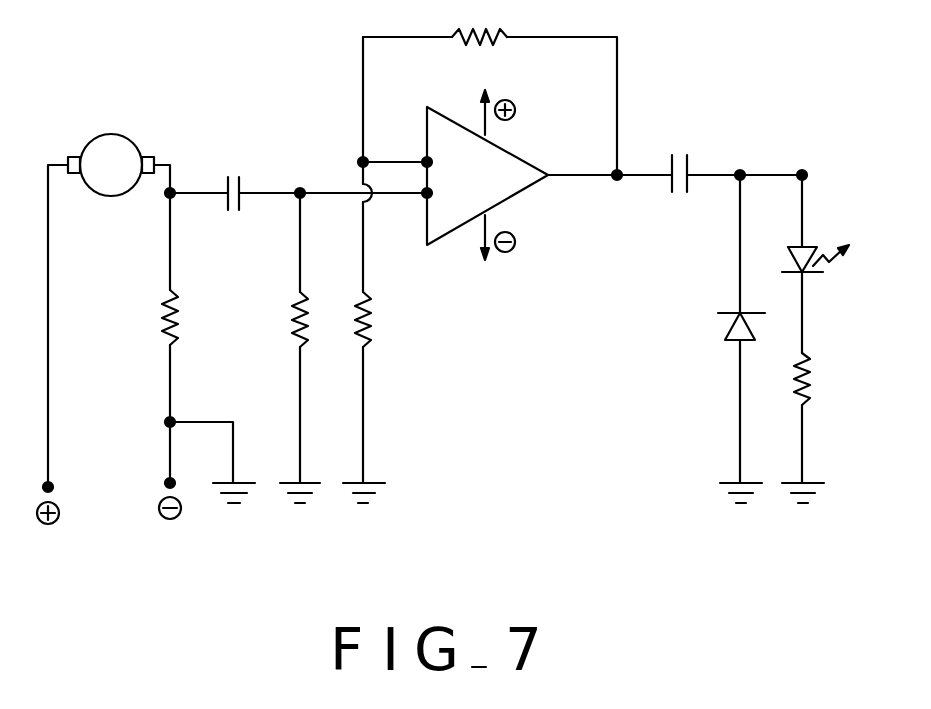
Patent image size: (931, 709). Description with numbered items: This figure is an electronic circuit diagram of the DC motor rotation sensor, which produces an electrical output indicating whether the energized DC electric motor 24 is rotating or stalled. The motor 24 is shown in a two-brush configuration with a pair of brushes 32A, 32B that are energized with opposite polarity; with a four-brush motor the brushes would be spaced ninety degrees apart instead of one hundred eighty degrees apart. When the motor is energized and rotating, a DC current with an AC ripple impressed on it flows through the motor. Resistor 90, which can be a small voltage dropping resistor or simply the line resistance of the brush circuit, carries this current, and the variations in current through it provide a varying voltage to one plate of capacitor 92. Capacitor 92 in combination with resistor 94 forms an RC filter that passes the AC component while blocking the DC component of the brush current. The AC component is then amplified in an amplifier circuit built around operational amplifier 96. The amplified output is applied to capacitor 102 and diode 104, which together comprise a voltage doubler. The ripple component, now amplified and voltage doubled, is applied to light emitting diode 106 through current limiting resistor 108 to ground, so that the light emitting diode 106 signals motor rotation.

The motor 24 is at (117, 134).
The brush 32A is at (73, 157).
The brush 32B is at (150, 157).
The resistor 90 is at (162, 312).
The capacitor 92 is at (235, 177).
The resistor 94 is at (293, 313).
The operational amplifier 96 is at (484, 187).
The capacitor 102 is at (680, 155).
The diode 104 is at (728, 320).
The light emitting diode 106 is at (808, 277).
The current limiting resistor 108 is at (812, 363).